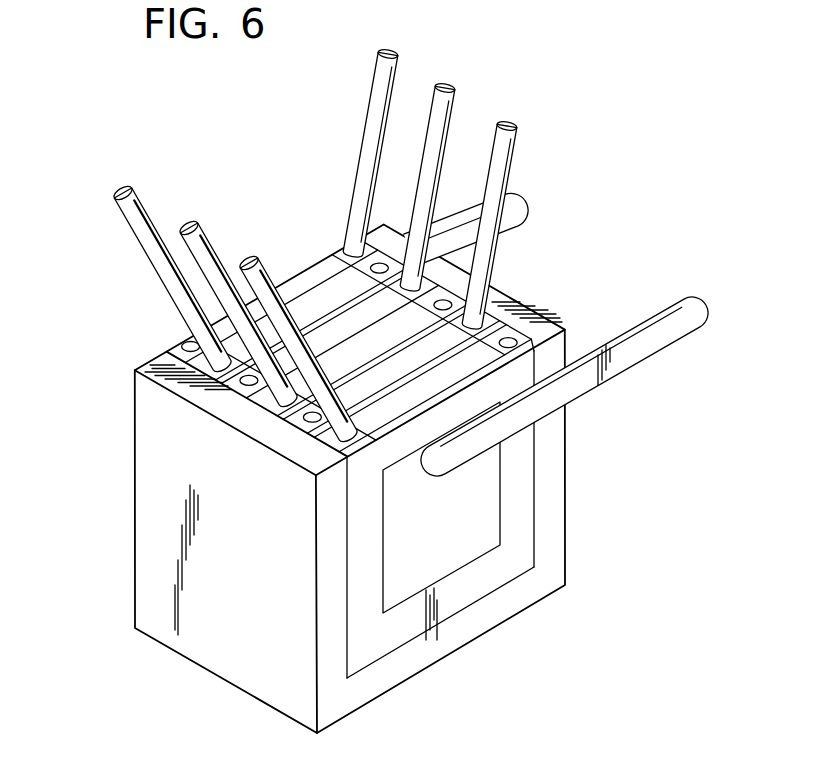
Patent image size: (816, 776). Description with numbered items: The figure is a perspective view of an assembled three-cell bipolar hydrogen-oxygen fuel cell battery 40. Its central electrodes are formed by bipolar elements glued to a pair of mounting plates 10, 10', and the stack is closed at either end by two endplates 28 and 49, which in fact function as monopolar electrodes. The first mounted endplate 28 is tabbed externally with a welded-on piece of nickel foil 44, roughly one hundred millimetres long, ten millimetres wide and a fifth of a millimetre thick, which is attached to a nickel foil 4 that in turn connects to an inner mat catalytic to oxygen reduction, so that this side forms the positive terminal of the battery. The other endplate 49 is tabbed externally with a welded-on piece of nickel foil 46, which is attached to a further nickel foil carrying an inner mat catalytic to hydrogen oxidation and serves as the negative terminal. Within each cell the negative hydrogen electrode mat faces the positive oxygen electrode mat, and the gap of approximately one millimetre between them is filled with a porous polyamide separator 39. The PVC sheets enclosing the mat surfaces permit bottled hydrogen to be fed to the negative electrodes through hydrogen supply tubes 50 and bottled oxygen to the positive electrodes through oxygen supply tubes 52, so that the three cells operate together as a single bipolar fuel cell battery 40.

The nickel foil 4 is at (440, 527).
The mounting plate 10 is at (325, 360).
The mounting plate 10' is at (257, 430).
The first mounted endplate 28 is at (523, 550).
The porous polyamide separator 39 is at (438, 363).
The bipolar hydrogen oxygen fuel cell battery 40 is at (124, 556).
The nickel foil 44 is at (690, 322).
The nickel foil 46 is at (526, 214).
The endplate 49 is at (304, 278).
The hydrogen supply tubes 50 is at (518, 132).
The oxygen supply tubes 52 is at (132, 217).